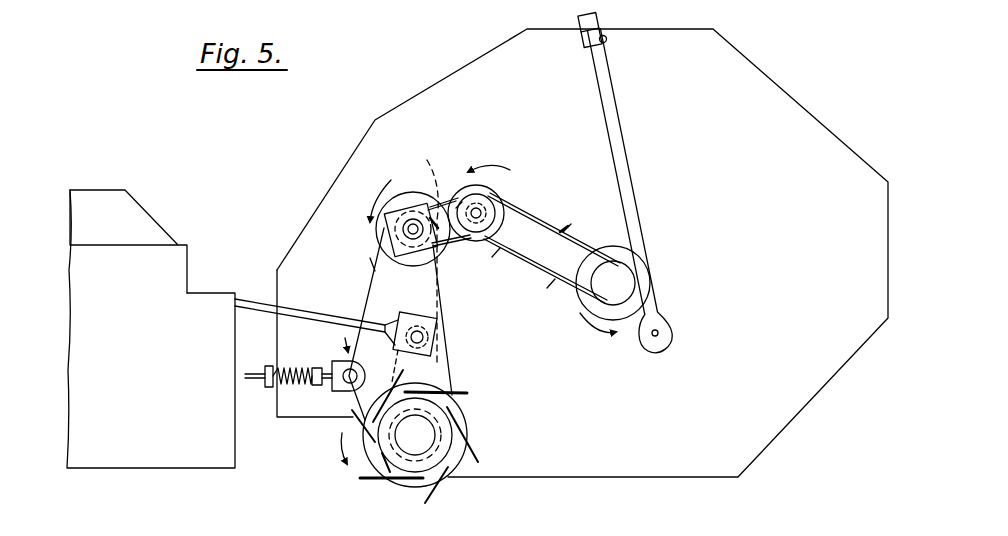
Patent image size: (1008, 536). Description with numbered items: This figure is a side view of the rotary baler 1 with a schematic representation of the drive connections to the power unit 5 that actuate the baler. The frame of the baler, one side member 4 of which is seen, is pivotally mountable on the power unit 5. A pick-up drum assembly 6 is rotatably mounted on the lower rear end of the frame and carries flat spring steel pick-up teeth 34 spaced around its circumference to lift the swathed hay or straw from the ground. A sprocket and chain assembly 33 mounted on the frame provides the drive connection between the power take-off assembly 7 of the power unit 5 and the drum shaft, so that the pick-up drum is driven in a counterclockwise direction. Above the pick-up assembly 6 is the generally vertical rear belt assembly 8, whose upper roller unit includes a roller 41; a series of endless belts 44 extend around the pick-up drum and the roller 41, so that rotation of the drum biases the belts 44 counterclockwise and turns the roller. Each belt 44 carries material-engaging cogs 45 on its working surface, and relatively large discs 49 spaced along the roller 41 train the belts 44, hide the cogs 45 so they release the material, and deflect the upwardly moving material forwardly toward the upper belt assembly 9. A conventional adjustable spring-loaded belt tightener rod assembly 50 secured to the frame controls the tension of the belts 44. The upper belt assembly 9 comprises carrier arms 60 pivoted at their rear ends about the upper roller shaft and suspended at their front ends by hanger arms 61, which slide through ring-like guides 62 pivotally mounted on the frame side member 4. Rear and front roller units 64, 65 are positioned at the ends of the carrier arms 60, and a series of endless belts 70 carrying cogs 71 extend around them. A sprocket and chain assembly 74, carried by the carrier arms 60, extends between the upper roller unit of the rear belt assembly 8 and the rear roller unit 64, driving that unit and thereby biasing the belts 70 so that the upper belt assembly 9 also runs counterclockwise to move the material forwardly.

The rotary baler 1 is at (410, 48).
The side member 4 is at (753, 79).
The power unit 5 is at (136, 222).
The pick-up drum assembly 6 is at (481, 423).
The power take-off assembly 7 is at (257, 292).
The rear belt assembly 8 is at (449, 292).
The upper belt assembly 9 is at (558, 211).
The sprocket and chain assembly 33 is at (433, 369).
The pick-up teeth 34 is at (433, 498).
The roller 41 is at (392, 234).
The endless belts 44 is at (368, 285).
The cogs 45 is at (446, 302).
The discs 49 is at (398, 196).
The spring-loaded belt tightener rod assembly 50 is at (314, 342).
The carrier arms 60 is at (578, 246).
The hanger arms 61 is at (617, 144).
The guides 62 is at (610, 32).
The rear roller unit 64 is at (494, 186).
The front roller unit 65 is at (596, 290).
The endless belts 70 is at (514, 254).
The cogs 71 is at (521, 193).
The sprocket and chain assembly 74 is at (419, 257).